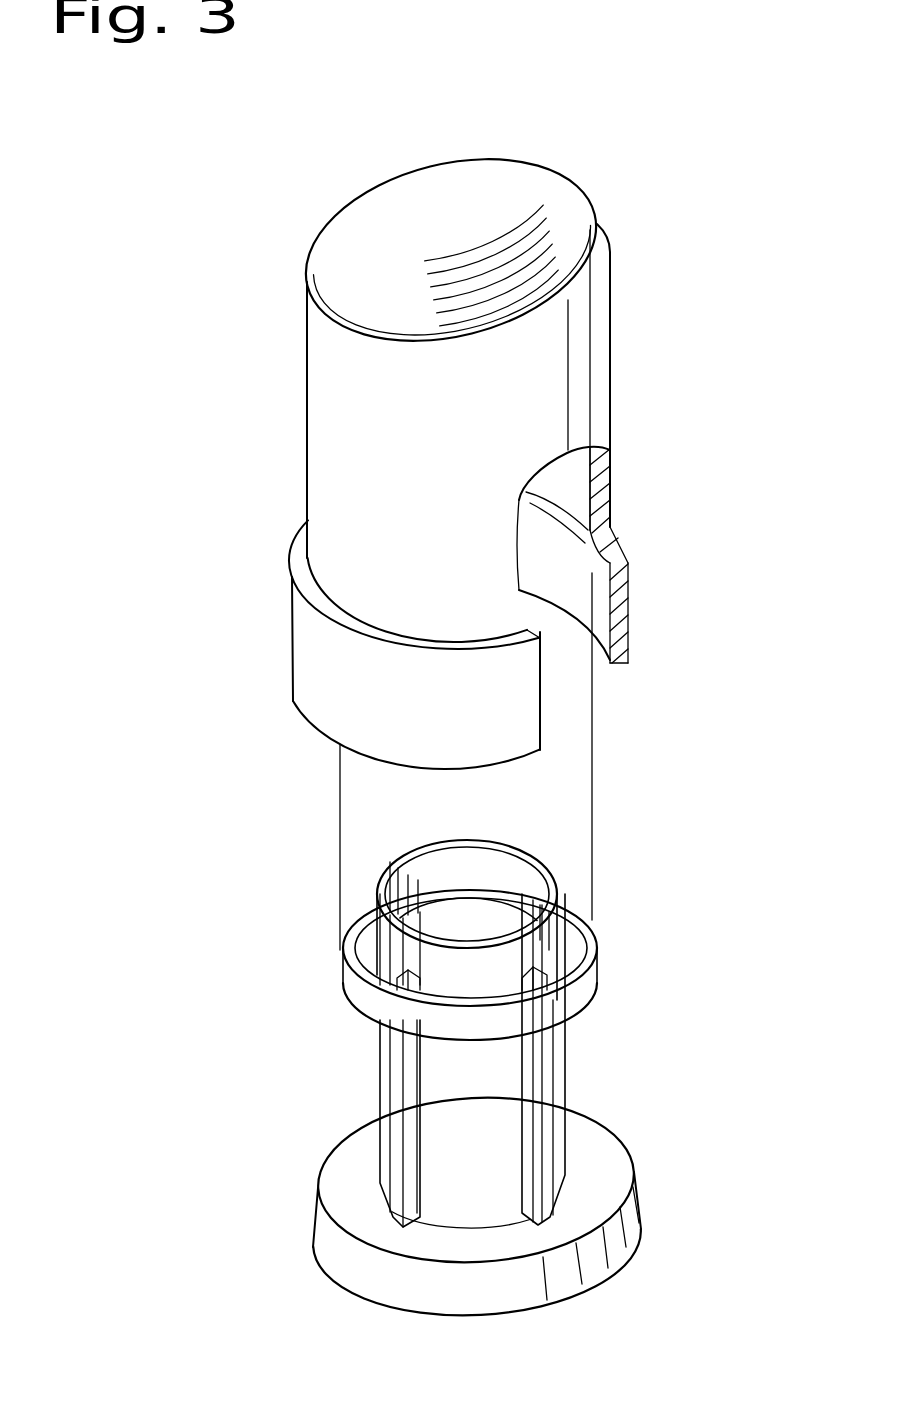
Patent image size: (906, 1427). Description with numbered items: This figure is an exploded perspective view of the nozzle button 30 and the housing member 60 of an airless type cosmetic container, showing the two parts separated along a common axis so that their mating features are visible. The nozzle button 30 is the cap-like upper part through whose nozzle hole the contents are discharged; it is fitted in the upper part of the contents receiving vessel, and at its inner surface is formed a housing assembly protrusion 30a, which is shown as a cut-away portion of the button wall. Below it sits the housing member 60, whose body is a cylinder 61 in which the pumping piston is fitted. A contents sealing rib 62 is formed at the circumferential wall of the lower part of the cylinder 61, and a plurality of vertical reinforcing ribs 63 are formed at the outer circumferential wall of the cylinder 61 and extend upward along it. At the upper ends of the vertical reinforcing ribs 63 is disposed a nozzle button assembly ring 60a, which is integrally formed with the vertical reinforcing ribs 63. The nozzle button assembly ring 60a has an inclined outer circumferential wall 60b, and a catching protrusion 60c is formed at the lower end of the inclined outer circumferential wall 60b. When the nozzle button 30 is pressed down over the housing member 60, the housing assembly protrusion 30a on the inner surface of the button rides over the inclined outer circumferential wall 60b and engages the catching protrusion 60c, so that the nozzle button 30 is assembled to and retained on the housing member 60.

The nozzle button 30 is at (313, 434).
The housing assembly protrusion 30a is at (617, 540).
The housing member 60 is at (333, 1025).
The nozzle button assembly ring 60a is at (593, 910).
The inclined outer circumferential wall 60b is at (598, 957).
The catching protrusion 60c is at (570, 1003).
The cylinder 61 is at (458, 1080).
The contents sealing rib 62 is at (627, 1187).
The vertical reinforcing ribs 63 is at (413, 1173).